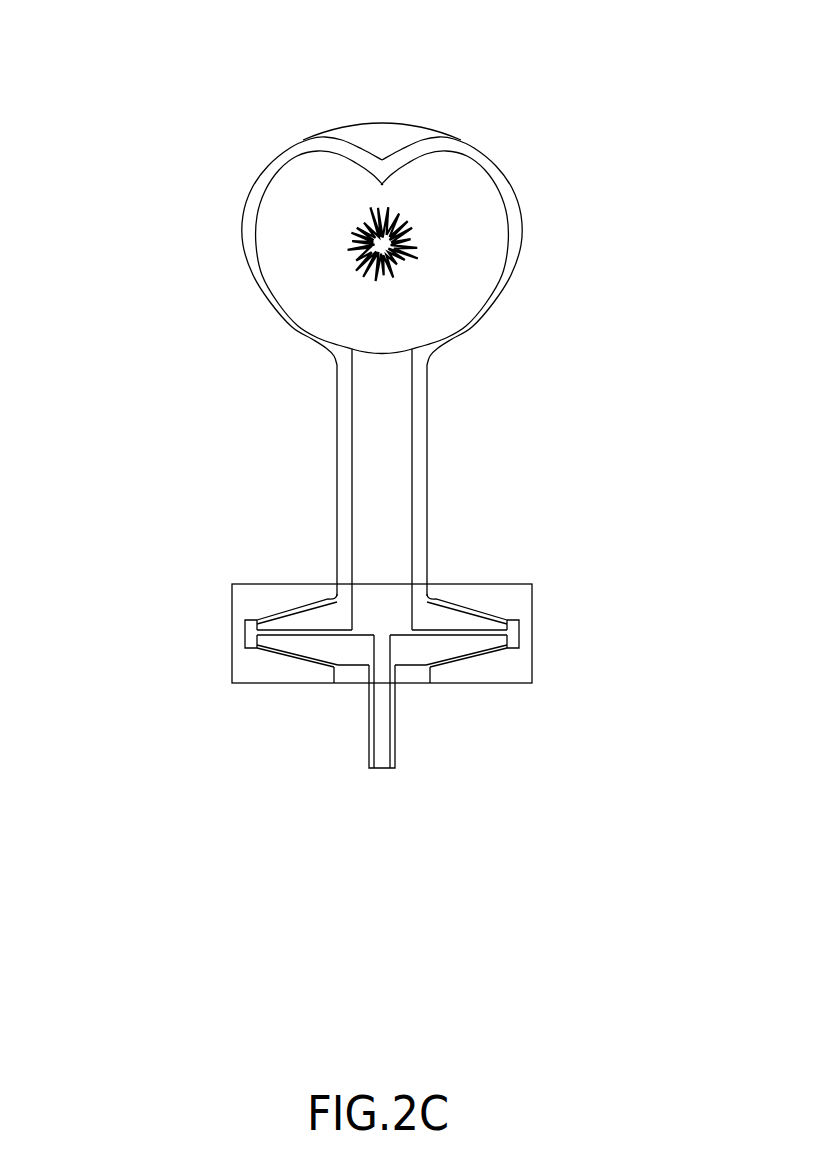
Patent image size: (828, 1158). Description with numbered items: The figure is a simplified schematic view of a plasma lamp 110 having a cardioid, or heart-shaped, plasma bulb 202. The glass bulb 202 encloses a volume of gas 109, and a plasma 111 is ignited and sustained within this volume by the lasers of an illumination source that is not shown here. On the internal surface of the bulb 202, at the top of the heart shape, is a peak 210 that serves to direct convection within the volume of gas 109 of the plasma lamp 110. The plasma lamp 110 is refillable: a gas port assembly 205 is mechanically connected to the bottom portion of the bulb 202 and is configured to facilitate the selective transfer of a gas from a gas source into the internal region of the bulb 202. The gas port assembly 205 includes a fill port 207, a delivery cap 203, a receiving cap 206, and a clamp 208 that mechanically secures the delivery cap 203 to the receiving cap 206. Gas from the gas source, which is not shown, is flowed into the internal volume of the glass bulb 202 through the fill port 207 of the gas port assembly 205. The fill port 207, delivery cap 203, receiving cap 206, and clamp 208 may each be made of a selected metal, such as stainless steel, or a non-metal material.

The plasma lamp 110 is at (250, 54).
The plasma bulb 202 is at (256, 189).
The peak 210 is at (383, 185).
The volume of gas 109 is at (486, 232).
The plasma 111 is at (397, 219).
The gas port assembly 205 is at (163, 606).
The clamp 208 is at (253, 598).
The receiving cap 206 is at (308, 617).
The delivery cap 203 is at (305, 648).
The fill port 207 is at (382, 733).